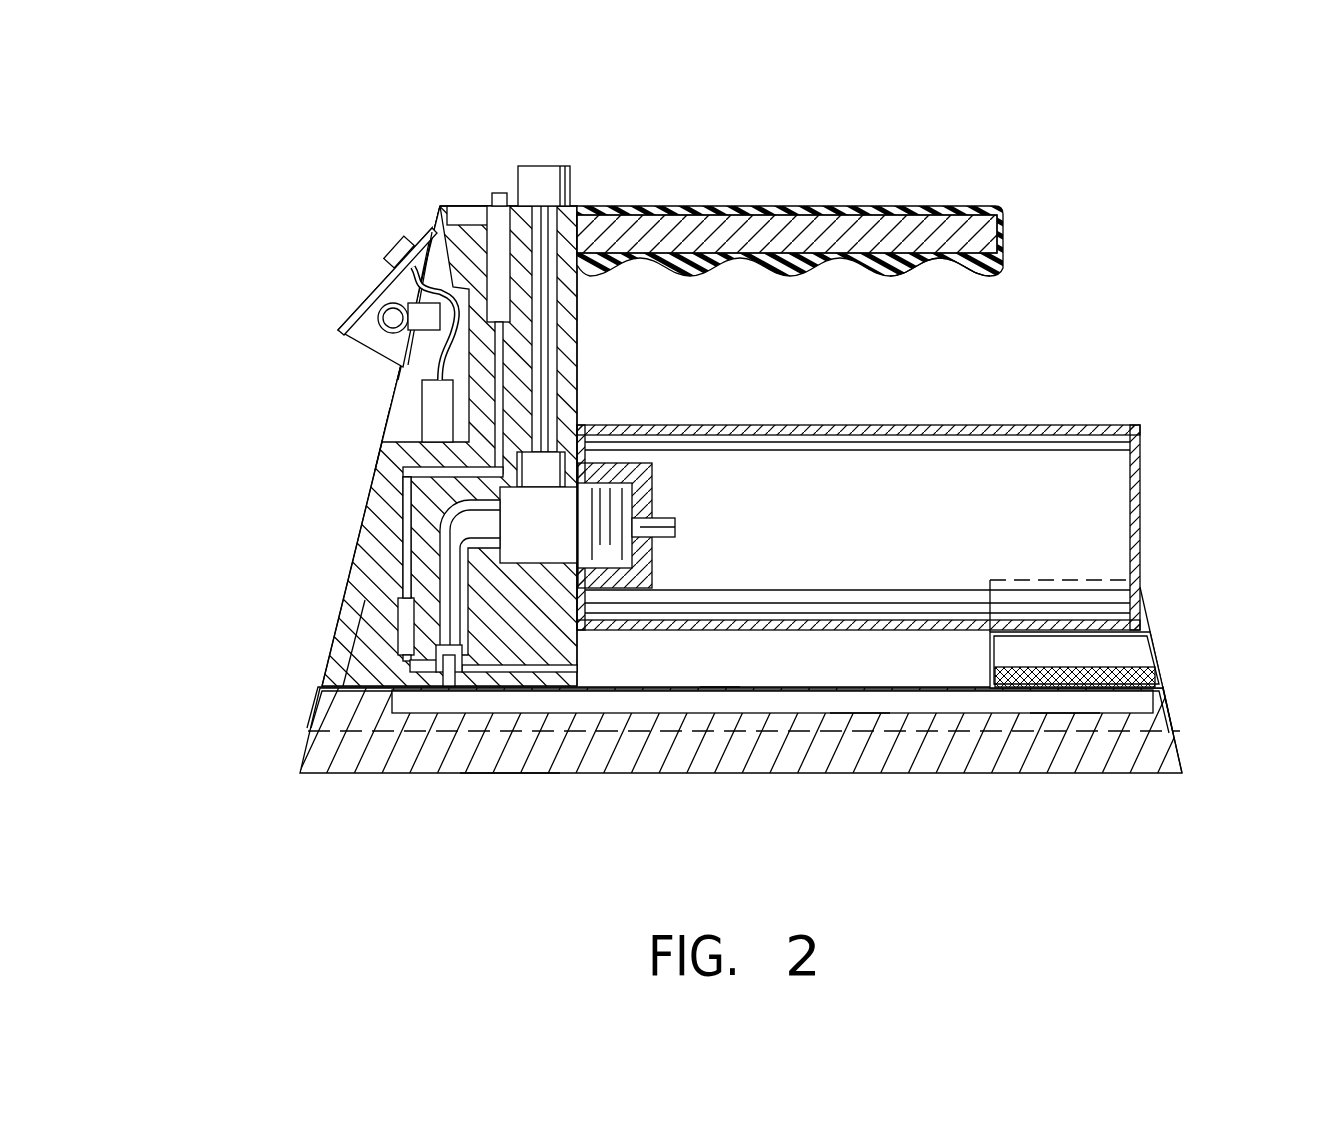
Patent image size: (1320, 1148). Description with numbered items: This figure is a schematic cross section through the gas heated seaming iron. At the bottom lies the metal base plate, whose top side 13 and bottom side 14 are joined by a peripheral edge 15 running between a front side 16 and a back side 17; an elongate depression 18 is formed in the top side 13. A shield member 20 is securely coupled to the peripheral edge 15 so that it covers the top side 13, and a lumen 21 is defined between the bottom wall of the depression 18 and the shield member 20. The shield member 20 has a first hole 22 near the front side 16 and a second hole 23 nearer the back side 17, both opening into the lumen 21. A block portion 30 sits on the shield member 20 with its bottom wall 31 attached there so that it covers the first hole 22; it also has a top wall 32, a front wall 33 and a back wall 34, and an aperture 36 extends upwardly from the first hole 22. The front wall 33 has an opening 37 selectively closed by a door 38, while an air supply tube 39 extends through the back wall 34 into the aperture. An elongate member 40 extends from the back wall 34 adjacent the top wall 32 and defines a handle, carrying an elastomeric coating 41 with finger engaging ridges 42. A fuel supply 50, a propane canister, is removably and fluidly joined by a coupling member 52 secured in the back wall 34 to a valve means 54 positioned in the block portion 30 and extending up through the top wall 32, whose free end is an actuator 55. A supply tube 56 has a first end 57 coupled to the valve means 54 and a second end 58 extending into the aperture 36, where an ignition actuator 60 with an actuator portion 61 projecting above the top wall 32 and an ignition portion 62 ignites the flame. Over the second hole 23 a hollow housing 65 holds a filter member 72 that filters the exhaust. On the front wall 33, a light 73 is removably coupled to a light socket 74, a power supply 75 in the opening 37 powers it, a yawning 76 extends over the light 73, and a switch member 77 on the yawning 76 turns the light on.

The top side 13 is at (336, 696).
The bottom side 14 is at (500, 774).
The peripheral edge 15 is at (1182, 760).
The front side 16 is at (309, 740).
The back side 17 is at (1177, 733).
The elongate depression 18 is at (853, 708).
The shield member 20 is at (727, 690).
The lumen 21 is at (768, 702).
The first hole 22 is at (447, 683).
The second hole 23 is at (1067, 690).
The block portion 30 is at (373, 610).
The bottom wall 31 is at (337, 665).
The top wall 32 is at (508, 200).
The front wall 33 is at (376, 470).
The back wall 34 is at (582, 322).
The aperture 36 is at (457, 673).
The opening 37 is at (412, 402).
The door 38 is at (395, 388).
The air supply tube 39 is at (578, 667).
The elongate member 40 is at (980, 207).
The elastomeric coating 41 is at (1005, 262).
The finger engaging ridges 42 is at (930, 268).
The fuel supply 50 is at (1125, 462).
The coupling member 52 is at (676, 526).
The valve means 54 is at (550, 500).
The actuator 55 is at (544, 167).
The supply tube 56 is at (452, 545).
The first end 57 is at (495, 503).
The second end 58 is at (428, 665).
The ignition actuator 60 is at (440, 207).
The actuator portion 61 is at (492, 193).
The ignition portion 62 is at (368, 672).
The housing 65 is at (1153, 640).
The filter member 72 is at (1153, 670).
The light 73 is at (380, 350).
The light socket 74 is at (430, 320).
The power supply 75 is at (423, 425).
The yawning 76 is at (392, 257).
The switch member 77 is at (397, 247).